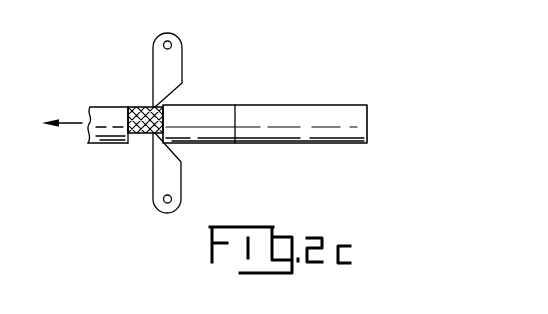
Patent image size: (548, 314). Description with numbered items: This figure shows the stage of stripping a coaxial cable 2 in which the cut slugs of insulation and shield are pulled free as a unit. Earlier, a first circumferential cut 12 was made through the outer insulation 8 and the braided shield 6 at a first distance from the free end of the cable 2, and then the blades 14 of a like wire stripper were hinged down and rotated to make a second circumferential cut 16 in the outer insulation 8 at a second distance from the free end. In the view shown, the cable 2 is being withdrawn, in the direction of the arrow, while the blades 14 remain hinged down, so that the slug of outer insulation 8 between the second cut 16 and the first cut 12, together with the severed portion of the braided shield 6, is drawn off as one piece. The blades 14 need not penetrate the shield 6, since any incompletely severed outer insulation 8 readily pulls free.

The coaxial cable 2 is at (85, 104).
The braided shield 6 is at (147, 105).
The outer insulation 8 is at (108, 144).
The first circumferential cut 12 is at (235, 104).
The blades 14 is at (181, 59).
The second circumferential cut 16 is at (128, 107).